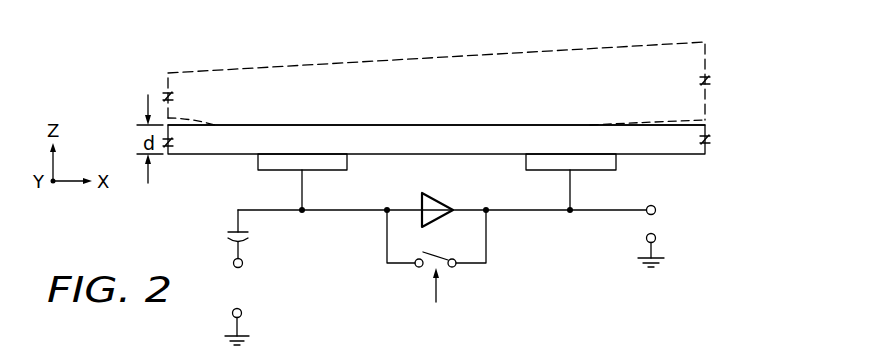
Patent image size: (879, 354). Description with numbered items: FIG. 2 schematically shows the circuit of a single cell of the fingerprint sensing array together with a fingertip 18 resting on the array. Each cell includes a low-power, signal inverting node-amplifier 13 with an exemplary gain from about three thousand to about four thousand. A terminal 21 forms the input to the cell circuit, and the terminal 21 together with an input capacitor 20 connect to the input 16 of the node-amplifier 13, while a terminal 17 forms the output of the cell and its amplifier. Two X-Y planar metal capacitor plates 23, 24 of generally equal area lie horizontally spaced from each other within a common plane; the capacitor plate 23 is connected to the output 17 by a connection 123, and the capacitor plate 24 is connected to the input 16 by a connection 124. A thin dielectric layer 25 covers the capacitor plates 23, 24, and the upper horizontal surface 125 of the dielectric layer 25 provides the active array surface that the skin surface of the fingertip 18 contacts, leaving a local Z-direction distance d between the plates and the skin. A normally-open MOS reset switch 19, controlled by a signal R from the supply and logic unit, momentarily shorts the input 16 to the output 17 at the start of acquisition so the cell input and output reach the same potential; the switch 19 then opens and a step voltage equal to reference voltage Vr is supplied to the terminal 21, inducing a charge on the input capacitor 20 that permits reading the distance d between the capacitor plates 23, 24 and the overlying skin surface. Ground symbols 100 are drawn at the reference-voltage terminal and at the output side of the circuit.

The fingertip 18 is at (250, 65).
The dielectric layer 25 is at (576, 131).
The upper surface 125 is at (485, 122).
The capacitor plate 24 is at (258, 163).
The capacitor plate 23 is at (617, 160).
The connection 124 is at (306, 180).
The connection 123 is at (568, 178).
The input 16 is at (305, 214).
The node-amplifier 13 is at (437, 194).
The reset switch 19 is at (440, 257).
The input capacitor 20 is at (227, 233).
The terminal 21 is at (233, 260).
The terminal 17 is at (656, 207).
The ground 100 is at (232, 315).